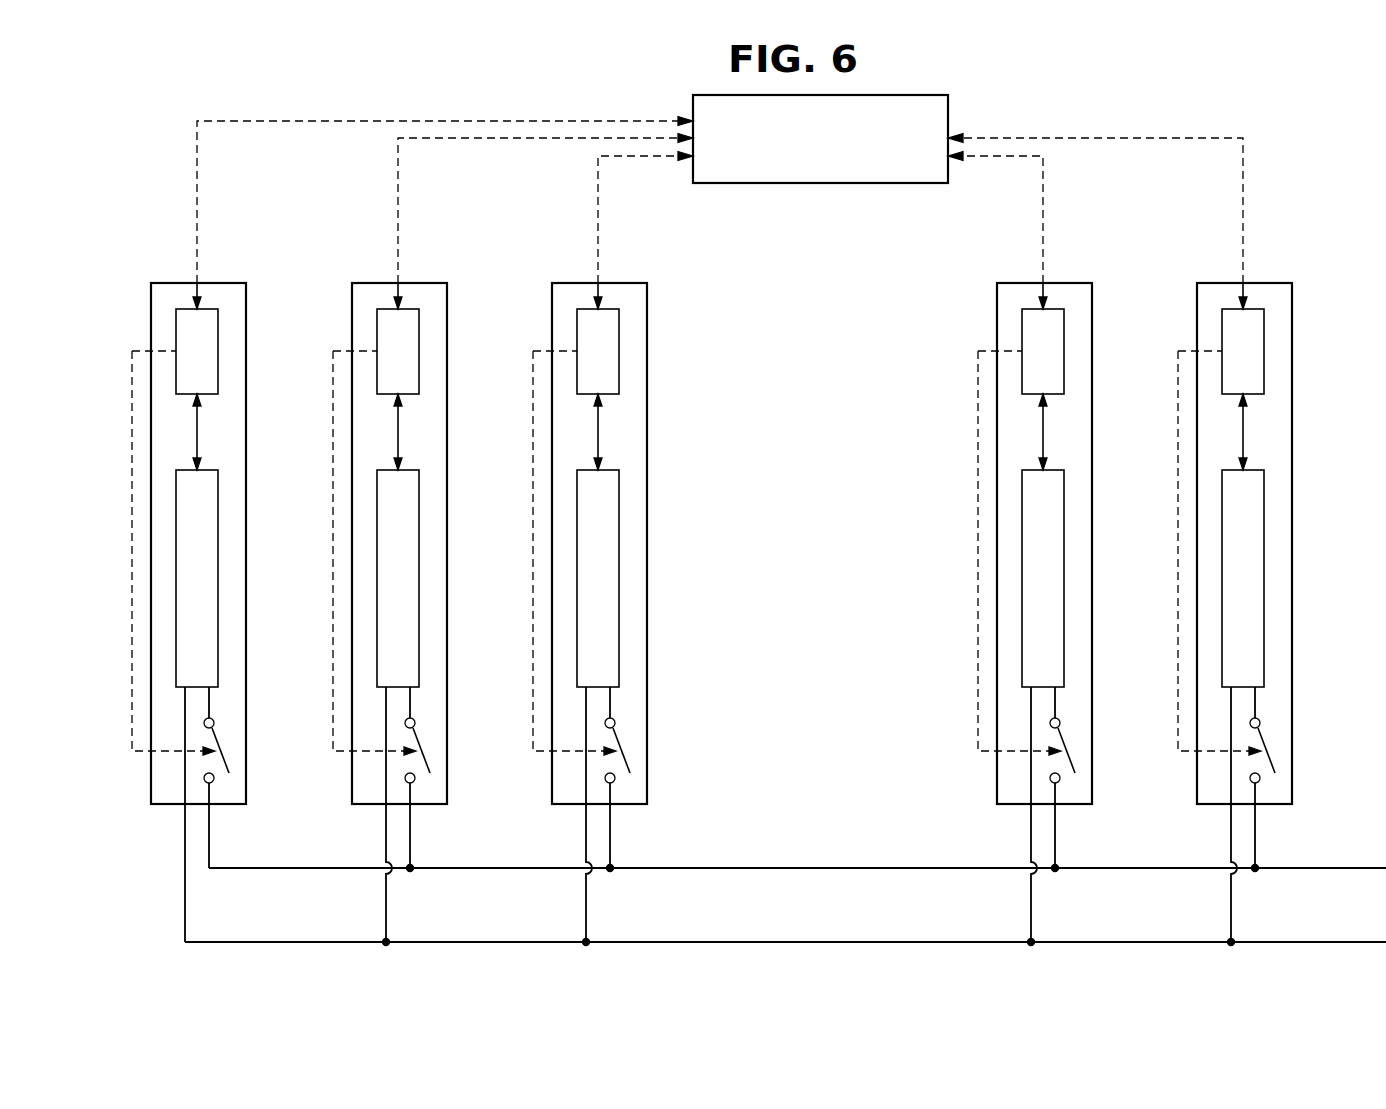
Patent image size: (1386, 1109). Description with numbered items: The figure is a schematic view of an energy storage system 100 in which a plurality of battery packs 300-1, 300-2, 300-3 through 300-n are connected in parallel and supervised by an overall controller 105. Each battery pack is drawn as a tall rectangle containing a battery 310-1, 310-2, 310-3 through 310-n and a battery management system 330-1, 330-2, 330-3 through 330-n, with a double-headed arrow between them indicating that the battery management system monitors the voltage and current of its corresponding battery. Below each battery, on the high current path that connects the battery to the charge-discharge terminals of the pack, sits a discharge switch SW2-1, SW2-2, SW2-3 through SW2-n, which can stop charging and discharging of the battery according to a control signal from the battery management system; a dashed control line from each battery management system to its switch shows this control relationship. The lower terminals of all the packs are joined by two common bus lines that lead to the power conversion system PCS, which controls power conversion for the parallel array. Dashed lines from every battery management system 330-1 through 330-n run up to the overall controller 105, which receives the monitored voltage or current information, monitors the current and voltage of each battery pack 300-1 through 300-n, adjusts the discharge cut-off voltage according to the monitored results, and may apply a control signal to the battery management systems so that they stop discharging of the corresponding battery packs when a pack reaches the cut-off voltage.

The energy storage system 100 is at (1290, 91).
The overall controller 105 is at (905, 95).
The battery pack 300-1 is at (212, 283).
The battery pack 300-2 is at (413, 283).
The battery pack 300-3 is at (613, 283).
The battery pack 300-n is at (1258, 283).
The battery management system 330-1 is at (218, 352).
The battery management system 330-2 is at (419, 352).
The battery management system 330-3 is at (619, 352).
The battery management system 330-n is at (1264, 327).
The battery 310-1 is at (218, 577).
The battery 310-2 is at (419, 577).
The battery 310-3 is at (619, 577).
The battery 310-n is at (1264, 577).
The discharge switch SW2-1 is at (231, 752).
The discharge switch SW2-2 is at (432, 752).
The discharge switch SW2-3 is at (632, 752).
The discharge switch SW2-n is at (1277, 752).
The power conversion system PCS is at (1380, 921).